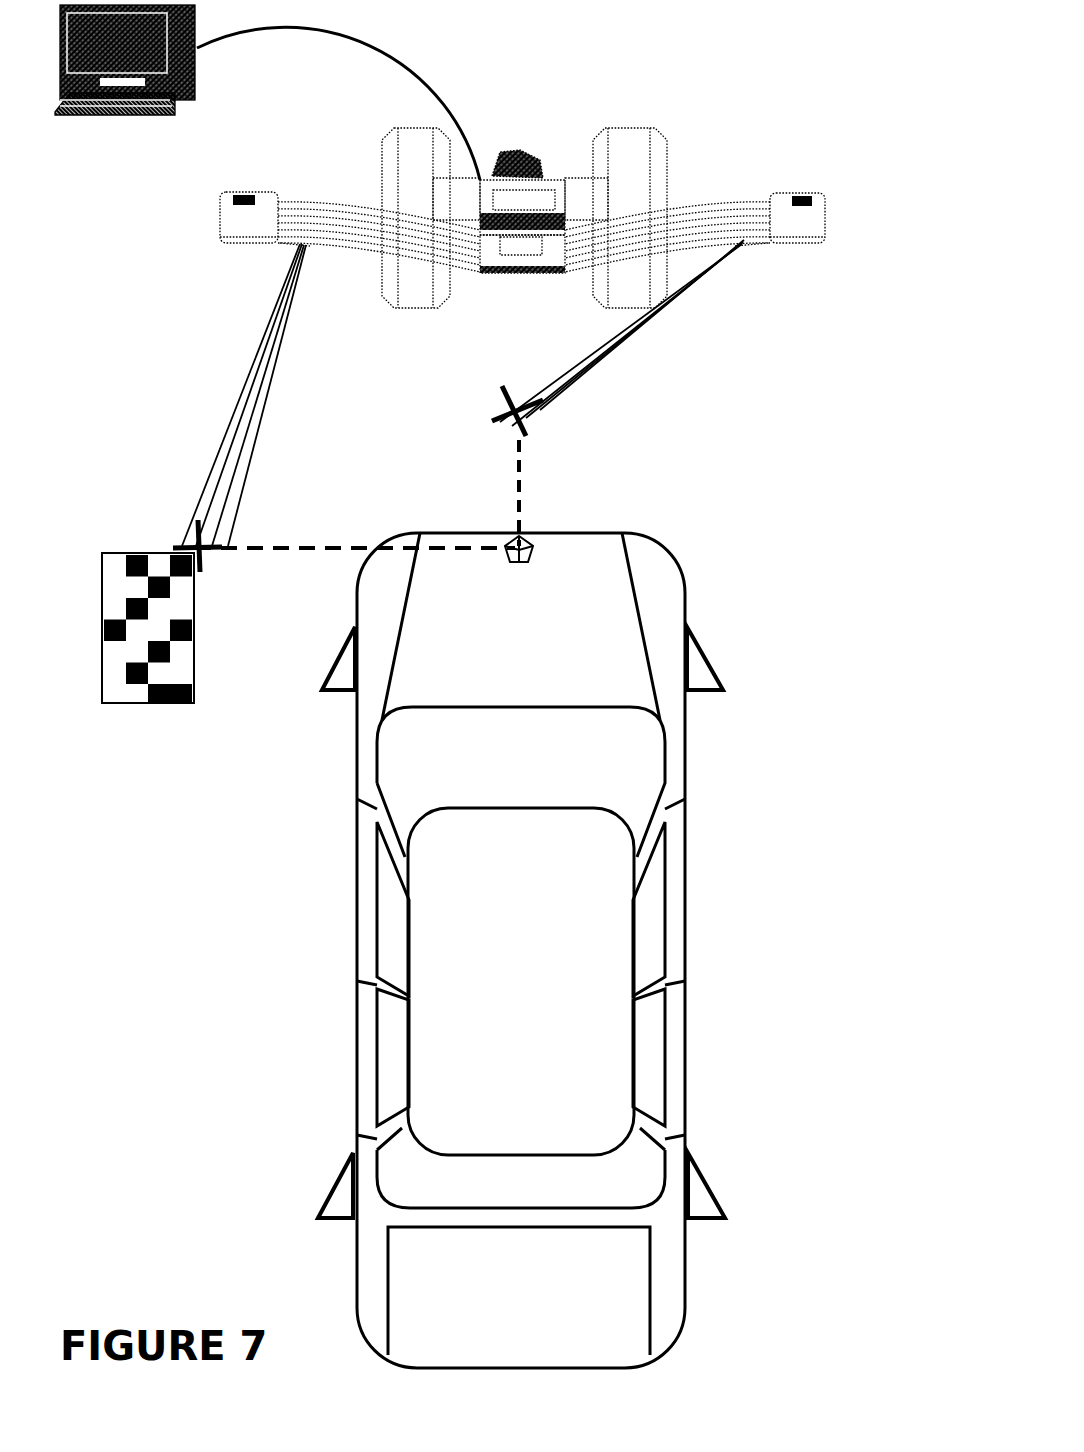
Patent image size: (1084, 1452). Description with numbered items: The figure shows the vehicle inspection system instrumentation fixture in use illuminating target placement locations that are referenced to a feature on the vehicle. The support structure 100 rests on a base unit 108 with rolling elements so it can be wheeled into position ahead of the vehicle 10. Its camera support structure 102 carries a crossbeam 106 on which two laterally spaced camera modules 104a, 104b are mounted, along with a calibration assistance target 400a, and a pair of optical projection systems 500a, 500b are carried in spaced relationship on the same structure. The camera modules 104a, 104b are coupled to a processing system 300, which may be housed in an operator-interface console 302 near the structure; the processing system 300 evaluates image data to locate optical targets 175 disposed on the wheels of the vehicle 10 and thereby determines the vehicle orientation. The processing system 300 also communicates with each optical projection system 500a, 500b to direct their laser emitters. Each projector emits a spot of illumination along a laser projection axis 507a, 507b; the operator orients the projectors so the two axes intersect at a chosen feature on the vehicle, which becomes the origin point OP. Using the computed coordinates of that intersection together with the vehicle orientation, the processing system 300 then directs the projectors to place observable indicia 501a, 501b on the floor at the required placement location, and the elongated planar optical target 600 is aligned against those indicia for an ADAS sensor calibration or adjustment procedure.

The vehicle 10 is at (342, 971).
The support structure 100 is at (513, 191).
The camera support structure 102 is at (534, 237).
The camera module 104a is at (795, 213).
The camera module 104b is at (252, 215).
The crossbeam 106 is at (675, 218).
The base unit 108 is at (627, 186).
The optical target 175 is at (333, 665).
The processing system 300 is at (192, 90).
The operator-interface console 302 is at (107, 127).
The calibration assistance target 400a is at (535, 275).
The optical projection system 500a is at (749, 246).
The optical projection system 500b is at (297, 249).
The observable indicia 501a is at (478, 422).
The observable indicia 501b is at (190, 536).
The laser projection axis 507a is at (666, 313).
The laser projection axis 507b is at (224, 429).
The elongated planar optical target 600 is at (200, 708).
The origin point OP is at (551, 563).